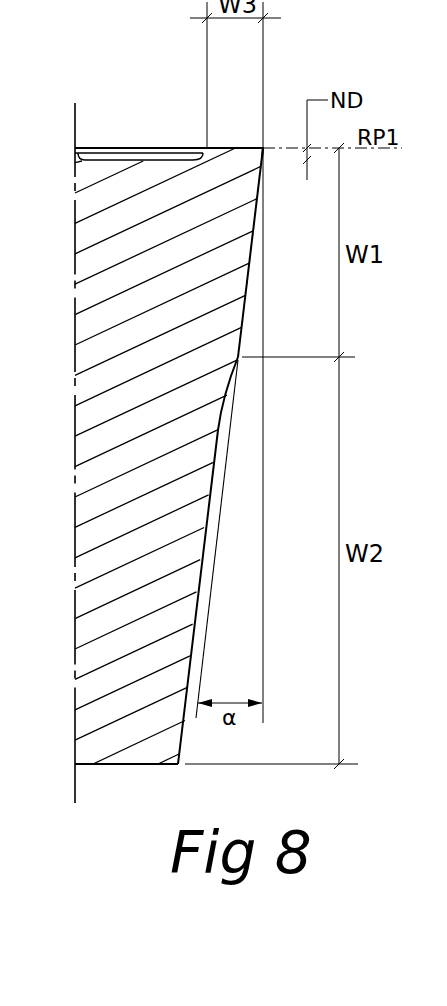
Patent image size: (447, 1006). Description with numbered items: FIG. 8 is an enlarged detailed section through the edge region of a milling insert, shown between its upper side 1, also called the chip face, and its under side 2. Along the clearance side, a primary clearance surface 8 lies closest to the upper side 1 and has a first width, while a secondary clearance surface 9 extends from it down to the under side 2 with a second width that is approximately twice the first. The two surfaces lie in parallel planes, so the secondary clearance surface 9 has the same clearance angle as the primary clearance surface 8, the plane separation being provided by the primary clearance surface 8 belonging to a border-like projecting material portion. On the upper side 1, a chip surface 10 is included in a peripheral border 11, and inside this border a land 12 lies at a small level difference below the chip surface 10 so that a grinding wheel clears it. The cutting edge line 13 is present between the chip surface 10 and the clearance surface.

The upper side 1 is at (130, 90).
The under side 2 is at (116, 778).
The primary clearance surface 8 is at (249, 282).
The secondary clearance surface 9 is at (212, 487).
The chip surface 10 is at (223, 148).
The peripheral border 11 is at (188, 138).
The land 12 is at (118, 160).
The cutting edge line 13 is at (264, 148).